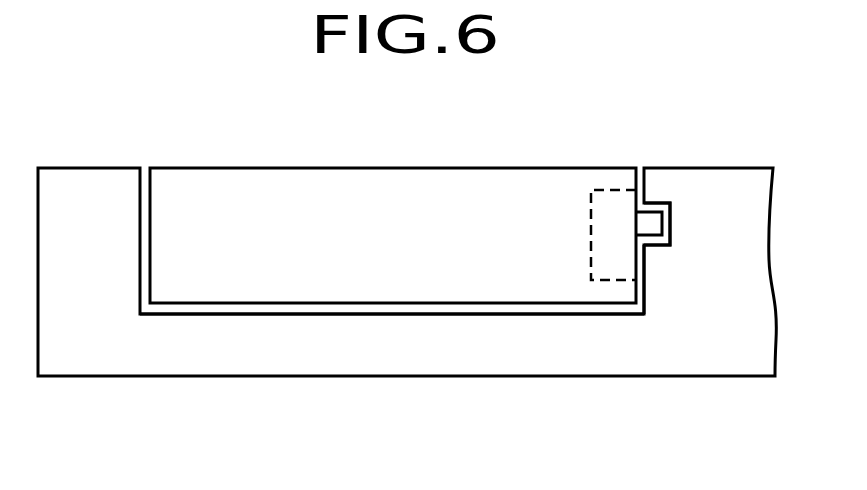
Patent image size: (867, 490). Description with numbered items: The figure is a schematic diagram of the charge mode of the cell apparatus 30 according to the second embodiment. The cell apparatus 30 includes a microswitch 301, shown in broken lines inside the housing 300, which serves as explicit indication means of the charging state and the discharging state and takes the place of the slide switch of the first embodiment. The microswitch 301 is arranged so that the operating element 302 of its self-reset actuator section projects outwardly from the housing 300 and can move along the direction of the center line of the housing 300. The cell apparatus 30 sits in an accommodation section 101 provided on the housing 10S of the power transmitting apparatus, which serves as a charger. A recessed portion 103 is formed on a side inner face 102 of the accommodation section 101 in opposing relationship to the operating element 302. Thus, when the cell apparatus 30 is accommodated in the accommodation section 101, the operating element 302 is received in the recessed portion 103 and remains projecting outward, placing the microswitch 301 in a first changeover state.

The housing 10S is at (209, 357).
The accommodation section 101 is at (515, 315).
The side inner face 102 is at (645, 280).
The recessed portion 103 is at (670, 220).
The cell apparatus 30 is at (419, 195).
The housing 300 is at (407, 193).
The microswitch 301 is at (610, 203).
The operating element 302 is at (652, 222).